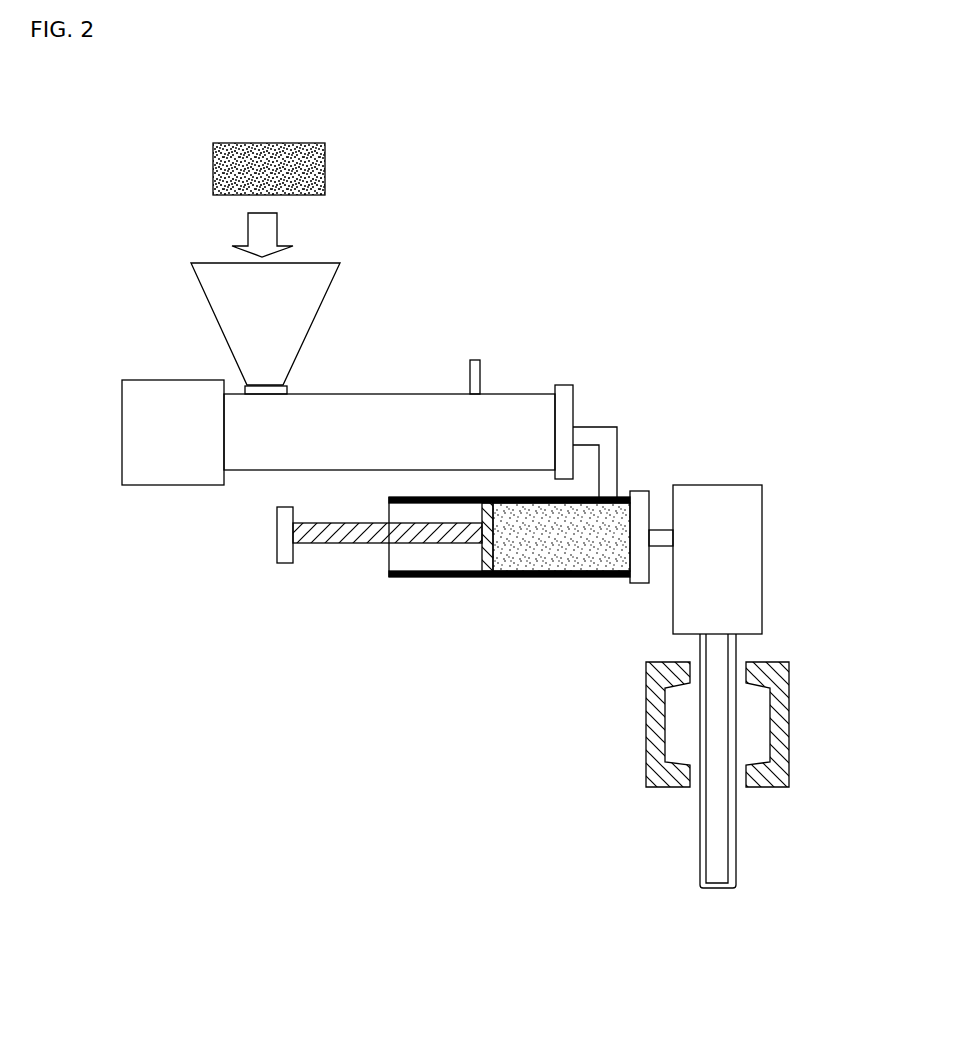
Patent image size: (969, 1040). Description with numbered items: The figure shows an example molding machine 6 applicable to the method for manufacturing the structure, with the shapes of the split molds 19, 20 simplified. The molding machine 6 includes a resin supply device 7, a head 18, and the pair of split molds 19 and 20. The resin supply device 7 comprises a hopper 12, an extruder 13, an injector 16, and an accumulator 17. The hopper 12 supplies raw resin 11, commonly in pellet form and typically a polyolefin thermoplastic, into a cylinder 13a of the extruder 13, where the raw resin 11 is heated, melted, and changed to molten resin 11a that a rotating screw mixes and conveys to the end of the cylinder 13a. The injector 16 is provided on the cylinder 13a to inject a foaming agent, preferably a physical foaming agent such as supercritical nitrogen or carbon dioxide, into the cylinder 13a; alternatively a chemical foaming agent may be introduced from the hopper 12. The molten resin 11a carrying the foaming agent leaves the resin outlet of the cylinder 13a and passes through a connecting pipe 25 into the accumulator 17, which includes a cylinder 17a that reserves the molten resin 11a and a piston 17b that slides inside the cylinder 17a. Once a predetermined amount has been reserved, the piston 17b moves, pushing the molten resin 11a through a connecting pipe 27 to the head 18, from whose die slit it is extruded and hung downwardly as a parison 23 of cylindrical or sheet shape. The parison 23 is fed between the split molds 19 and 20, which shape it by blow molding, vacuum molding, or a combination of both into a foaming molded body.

The molding machine 6 is at (659, 146).
The resin supply device 7 is at (447, 268).
The raw resin 11 is at (326, 158).
The molten resin 11a is at (565, 578).
The hopper 12 is at (213, 308).
The extruder 13 is at (347, 374).
The cylinder 13a is at (385, 401).
The injector 16 is at (480, 373).
The accumulator 17 is at (463, 598).
The cylinder 17a is at (430, 578).
The piston 17b is at (327, 538).
The head 18 is at (729, 505).
The split mold 19 is at (646, 757).
The split mold 20 is at (789, 762).
The parison 23 is at (736, 867).
The connecting pipe 25 is at (612, 422).
The connecting pipe 27 is at (660, 530).